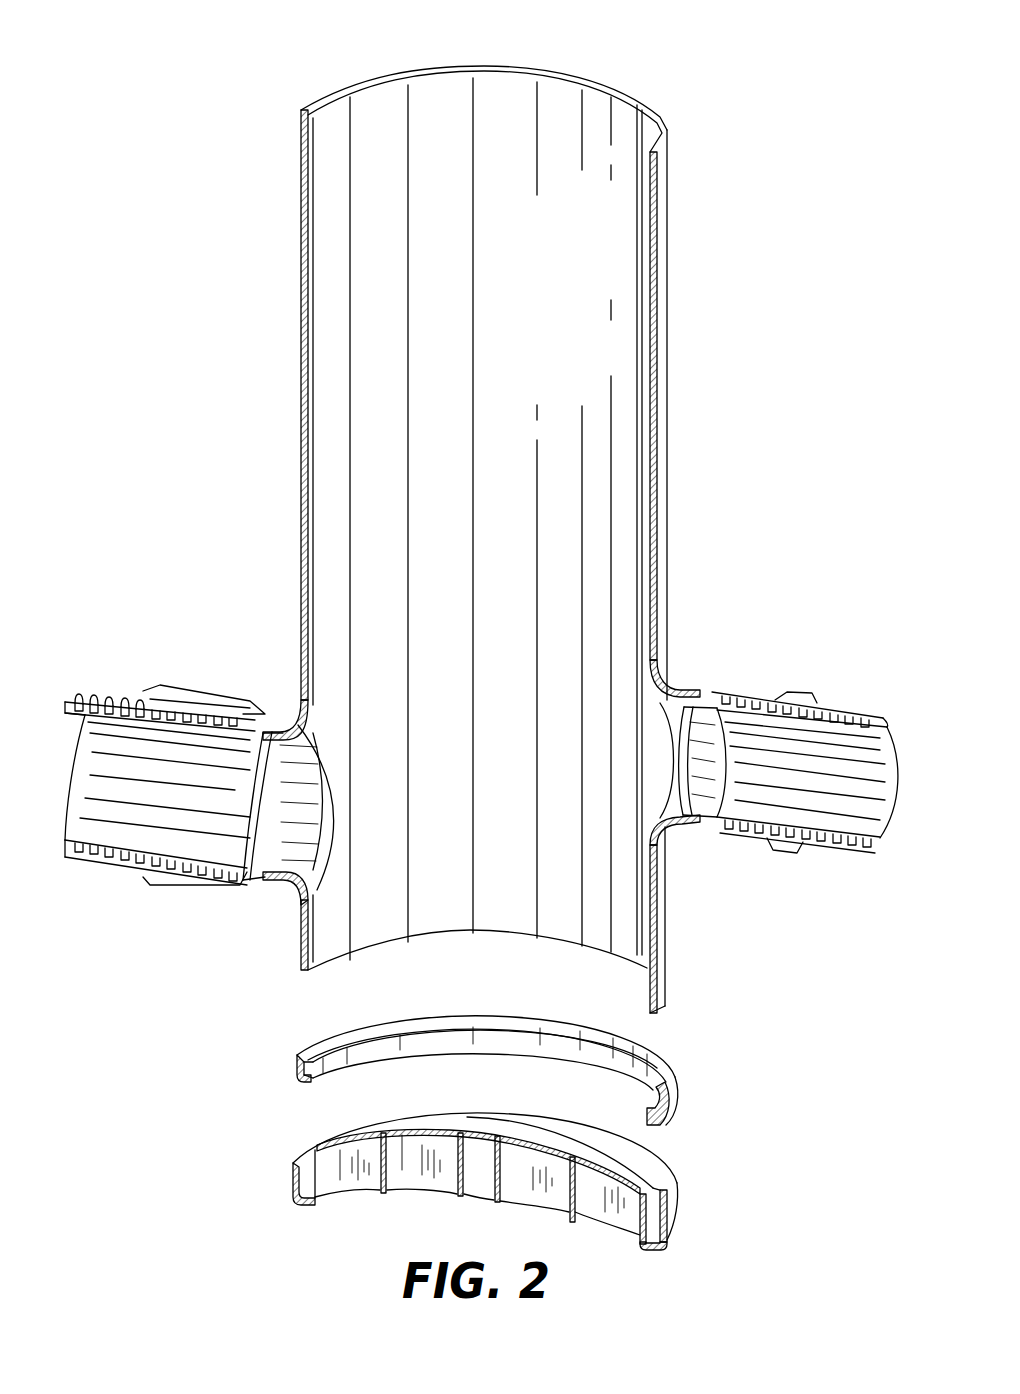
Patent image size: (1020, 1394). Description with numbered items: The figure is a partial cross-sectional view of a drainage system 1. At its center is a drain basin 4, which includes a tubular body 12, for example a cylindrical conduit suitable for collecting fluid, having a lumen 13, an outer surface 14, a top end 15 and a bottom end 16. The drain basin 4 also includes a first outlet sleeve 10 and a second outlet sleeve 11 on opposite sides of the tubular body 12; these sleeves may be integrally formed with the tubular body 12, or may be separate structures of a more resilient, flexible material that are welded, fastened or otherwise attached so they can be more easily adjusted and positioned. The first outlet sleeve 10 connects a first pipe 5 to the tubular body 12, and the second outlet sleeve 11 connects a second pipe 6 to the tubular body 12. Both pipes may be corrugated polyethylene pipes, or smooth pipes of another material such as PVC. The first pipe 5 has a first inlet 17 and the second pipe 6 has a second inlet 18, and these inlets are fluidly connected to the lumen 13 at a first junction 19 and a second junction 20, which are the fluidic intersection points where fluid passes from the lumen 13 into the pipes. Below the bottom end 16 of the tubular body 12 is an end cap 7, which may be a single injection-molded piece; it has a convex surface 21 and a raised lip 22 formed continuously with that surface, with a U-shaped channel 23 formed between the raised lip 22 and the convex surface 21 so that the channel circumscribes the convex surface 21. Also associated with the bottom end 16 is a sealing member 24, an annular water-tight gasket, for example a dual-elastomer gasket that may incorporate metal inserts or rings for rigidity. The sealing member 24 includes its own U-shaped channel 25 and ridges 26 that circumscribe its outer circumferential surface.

The drainage system 1 is at (162, 165).
The drain basin 4 is at (716, 368).
The first pipe 5 is at (68, 703).
The second pipe 6 is at (878, 715).
The end cap 7 is at (712, 1183).
The first outlet sleeve 10 is at (197, 702).
The second outlet sleeve 11 is at (800, 690).
The tubular body 12 is at (300, 433).
The lumen 13 is at (448, 513).
The outer surface 14 is at (660, 933).
The top end 15 is at (632, 94).
The bottom end 16 is at (415, 933).
The first inlet 17 is at (298, 843).
The second inlet 18 is at (693, 803).
The first junction 19 is at (342, 796).
The second junction 20 is at (637, 750).
The convex surface 21 is at (441, 1130).
The raised lip 22 is at (672, 1226).
The U-shaped channel 23 is at (650, 1240).
The sealing member 24 is at (445, 1037).
The U-shaped channel 25 is at (298, 1080).
The ridges 26 is at (298, 1057).